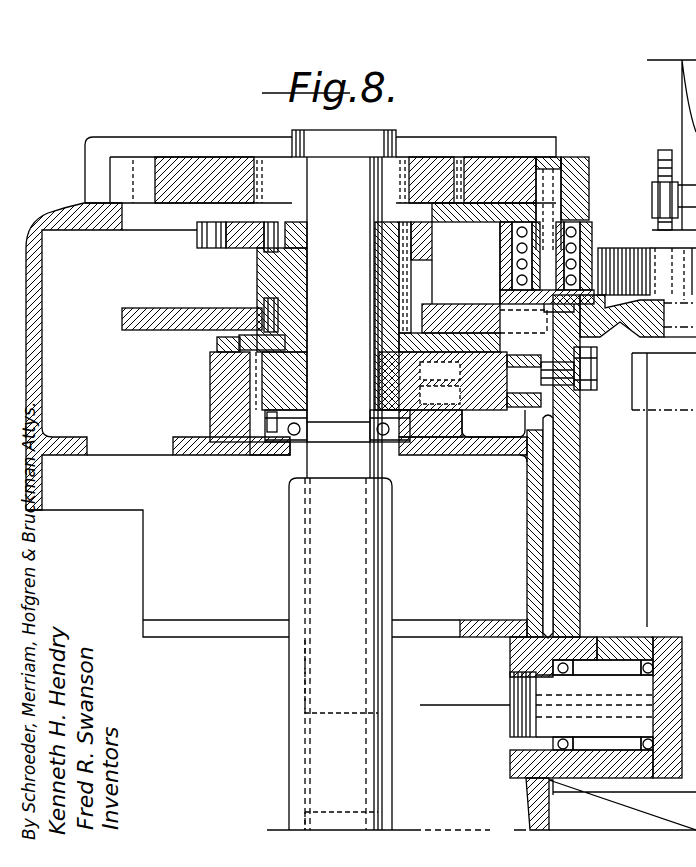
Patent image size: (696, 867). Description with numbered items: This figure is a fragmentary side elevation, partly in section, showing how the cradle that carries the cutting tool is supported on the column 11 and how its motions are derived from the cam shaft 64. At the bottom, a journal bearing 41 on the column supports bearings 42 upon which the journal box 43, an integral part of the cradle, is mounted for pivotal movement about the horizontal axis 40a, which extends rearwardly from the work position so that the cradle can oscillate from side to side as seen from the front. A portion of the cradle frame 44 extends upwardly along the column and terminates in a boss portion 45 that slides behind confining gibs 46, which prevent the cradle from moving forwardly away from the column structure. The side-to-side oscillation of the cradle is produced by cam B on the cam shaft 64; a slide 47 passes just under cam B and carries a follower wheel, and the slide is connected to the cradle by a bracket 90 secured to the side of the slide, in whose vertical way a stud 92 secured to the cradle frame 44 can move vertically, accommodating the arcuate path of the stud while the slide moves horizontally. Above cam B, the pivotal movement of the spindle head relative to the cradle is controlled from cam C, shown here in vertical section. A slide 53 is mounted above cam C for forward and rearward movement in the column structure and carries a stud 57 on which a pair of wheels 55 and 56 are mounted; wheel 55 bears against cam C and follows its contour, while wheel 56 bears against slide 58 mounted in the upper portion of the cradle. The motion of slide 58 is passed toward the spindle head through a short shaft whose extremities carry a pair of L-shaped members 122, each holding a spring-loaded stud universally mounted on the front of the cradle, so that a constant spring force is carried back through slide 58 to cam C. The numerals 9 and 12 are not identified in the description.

The column 11 is at (41, 232).
The cam C is at (220, 222).
The cam B is at (222, 315).
The slide 53 is at (432, 150).
The cam shaft 64 is at (355, 170).
The stud 57 is at (549, 180).
The confining gibs 46 is at (612, 300).
The slide 58 is at (628, 238).
The wheel 55 is at (498, 256).
The wheel 56 is at (500, 276).
The slide 47 is at (232, 377).
The boss portion 45 is at (585, 340).
The frame member 9 is at (644, 362).
The stud 92 is at (555, 385).
The L-shaped members 122 is at (695, 412).
The frame 12 is at (680, 414).
The bracket 90 is at (488, 398).
The cradle frame 44 is at (568, 486).
The journal bearing 41 is at (593, 680).
The journal box 43 is at (614, 648).
The bearings 42 is at (644, 645).
The horizontal axis 40a is at (482, 704).